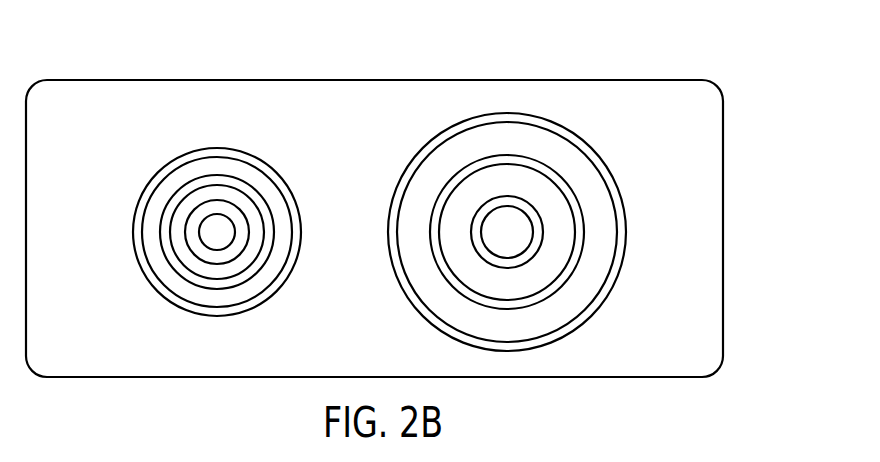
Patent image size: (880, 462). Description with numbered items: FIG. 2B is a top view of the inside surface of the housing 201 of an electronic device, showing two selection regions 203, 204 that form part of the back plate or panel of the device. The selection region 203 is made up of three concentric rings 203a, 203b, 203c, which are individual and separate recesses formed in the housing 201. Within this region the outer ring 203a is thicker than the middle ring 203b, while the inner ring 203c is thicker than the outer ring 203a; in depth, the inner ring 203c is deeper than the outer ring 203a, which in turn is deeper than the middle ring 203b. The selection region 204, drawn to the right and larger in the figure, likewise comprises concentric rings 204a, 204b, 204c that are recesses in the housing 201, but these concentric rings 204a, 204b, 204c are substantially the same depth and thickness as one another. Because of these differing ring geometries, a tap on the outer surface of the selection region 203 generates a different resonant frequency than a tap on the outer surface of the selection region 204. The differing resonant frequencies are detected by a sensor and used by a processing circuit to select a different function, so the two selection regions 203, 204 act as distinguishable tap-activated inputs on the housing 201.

The housing 201 is at (612, 80).
The selection region 203 is at (235, 199).
The outer ring 203a is at (272, 170).
The middle ring 203b is at (265, 203).
The inner ring 203c is at (245, 233).
The selection region 204 is at (528, 195).
The outer ring 204a is at (583, 140).
The middle ring 204b is at (577, 198).
The inner ring 204c is at (543, 235).